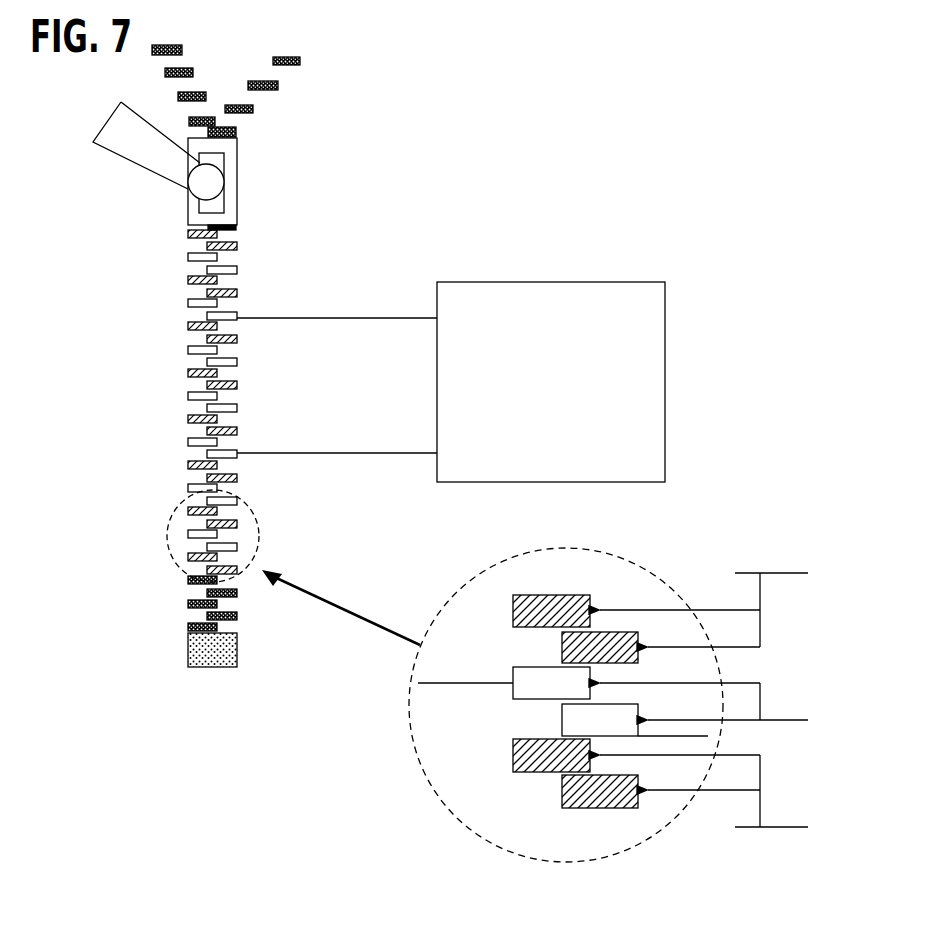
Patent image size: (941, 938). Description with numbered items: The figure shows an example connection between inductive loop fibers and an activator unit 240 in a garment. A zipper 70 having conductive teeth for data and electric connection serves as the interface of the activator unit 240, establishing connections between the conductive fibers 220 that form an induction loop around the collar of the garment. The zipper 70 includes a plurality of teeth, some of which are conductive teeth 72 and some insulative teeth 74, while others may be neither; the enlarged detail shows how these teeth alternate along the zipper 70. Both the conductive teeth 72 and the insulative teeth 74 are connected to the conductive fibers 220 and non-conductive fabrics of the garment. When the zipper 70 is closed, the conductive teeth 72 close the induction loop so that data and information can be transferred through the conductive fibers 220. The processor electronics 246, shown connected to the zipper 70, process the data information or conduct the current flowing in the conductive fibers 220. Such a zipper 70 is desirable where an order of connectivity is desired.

The zipper 70 is at (258, 202).
The activator unit 240 is at (820, 247).
The processor electronics 246 is at (613, 278).
The conductive fibers 220 is at (458, 690).
The insulative teeth 74 is at (722, 700).
The conductive teeth 72 is at (722, 708).